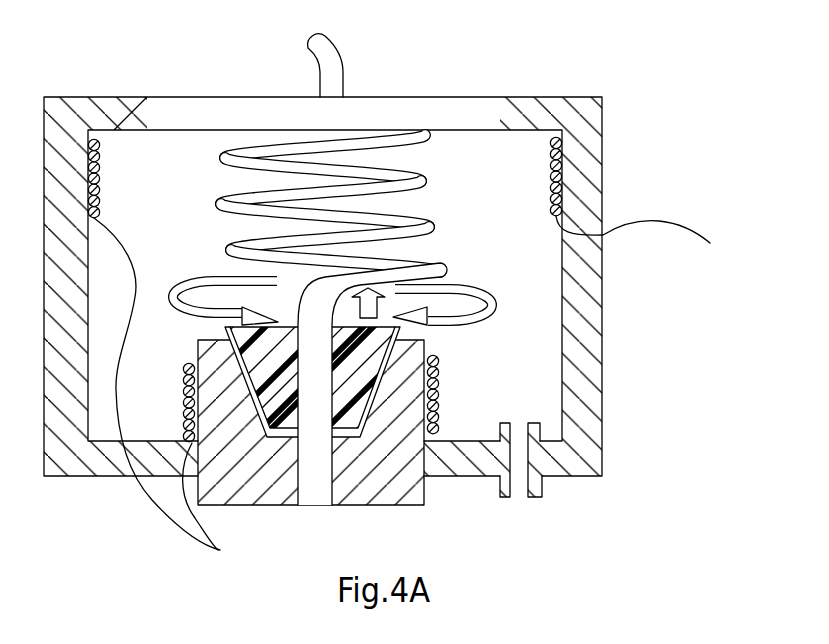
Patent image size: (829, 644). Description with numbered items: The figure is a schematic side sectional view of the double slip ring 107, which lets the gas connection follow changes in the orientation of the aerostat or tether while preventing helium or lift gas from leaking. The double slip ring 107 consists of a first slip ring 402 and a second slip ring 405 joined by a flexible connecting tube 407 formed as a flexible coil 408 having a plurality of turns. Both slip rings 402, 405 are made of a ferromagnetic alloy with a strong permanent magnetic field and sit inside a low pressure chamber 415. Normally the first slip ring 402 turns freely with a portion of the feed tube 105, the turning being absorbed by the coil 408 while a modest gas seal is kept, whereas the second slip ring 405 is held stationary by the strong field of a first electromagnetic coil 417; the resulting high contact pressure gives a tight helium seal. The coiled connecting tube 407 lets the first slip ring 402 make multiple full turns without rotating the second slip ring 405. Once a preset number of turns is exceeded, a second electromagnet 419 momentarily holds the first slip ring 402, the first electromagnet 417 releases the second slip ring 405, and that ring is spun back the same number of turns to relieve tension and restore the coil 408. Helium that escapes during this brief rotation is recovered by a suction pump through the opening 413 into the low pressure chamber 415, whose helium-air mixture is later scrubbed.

The feed tube 105 is at (322, 52).
The double slip ring 107 is at (665, 423).
The first slip ring 402 is at (402, 99).
The second slip ring 405 is at (404, 331).
The flexible connecting tube 407 is at (413, 228).
The flexible coil 408 is at (238, 232).
The opening 413 is at (536, 498).
The low pressure chamber 415 is at (530, 268).
The first electromagnetic coil 417 is at (439, 382).
The second electromagnet 419 is at (101, 173).